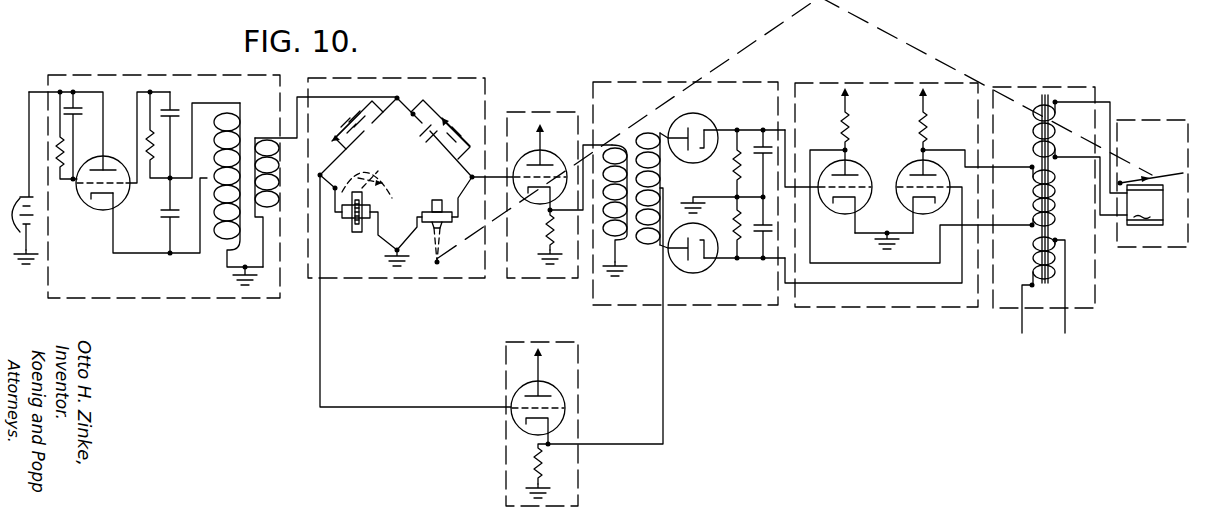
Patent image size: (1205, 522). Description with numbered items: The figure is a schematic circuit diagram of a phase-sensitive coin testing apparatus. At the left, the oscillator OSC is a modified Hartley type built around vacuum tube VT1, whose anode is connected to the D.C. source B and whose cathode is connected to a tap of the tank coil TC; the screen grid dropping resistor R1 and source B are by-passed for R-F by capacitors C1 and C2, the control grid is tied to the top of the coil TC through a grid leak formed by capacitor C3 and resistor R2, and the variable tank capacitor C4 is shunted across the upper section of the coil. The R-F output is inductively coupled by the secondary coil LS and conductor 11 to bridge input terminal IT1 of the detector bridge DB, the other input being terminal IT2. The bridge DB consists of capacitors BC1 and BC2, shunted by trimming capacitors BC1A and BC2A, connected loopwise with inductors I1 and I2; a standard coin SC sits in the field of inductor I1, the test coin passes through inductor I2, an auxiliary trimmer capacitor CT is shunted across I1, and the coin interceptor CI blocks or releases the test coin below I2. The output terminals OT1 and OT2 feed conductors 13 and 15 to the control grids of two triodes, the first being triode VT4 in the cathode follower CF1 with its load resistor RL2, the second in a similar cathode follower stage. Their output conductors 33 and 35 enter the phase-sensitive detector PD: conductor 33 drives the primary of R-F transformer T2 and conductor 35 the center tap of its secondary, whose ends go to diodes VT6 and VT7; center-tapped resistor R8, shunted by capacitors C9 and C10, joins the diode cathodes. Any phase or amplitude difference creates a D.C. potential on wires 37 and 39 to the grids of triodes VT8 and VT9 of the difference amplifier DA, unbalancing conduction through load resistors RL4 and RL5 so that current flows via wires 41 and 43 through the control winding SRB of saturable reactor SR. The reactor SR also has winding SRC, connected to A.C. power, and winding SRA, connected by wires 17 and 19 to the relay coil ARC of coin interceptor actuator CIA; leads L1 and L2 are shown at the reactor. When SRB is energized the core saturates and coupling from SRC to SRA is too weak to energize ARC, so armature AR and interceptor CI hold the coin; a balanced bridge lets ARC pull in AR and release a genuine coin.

The oscillator OSC is at (131, 78).
The source of D.C. power B is at (23, 196).
The capacitor C1 is at (76, 113).
The capacitor C2 is at (12, 226).
The screen grid dropping resistor R1 is at (67, 143).
The resistor R2 is at (146, 135).
The capacitor C3 is at (175, 111).
The variable tank capacitor C4 is at (178, 220).
The vacuum tube VT1 is at (120, 208).
The tank coil TC is at (245, 125).
The secondary coil LS is at (276, 204).
The conductor 11 is at (299, 96).
The detector bridge DB is at (365, 78).
The bridge input terminal IT1 is at (387, 91).
The bridge input terminal IT2 is at (380, 259).
The output terminal OT1 is at (326, 172).
The output terminal OT2 is at (471, 177).
The capacitor BC1 is at (366, 130).
The capacitor BC2 is at (422, 136).
The trimming capacitor BC1A is at (348, 123).
The trimming capacitor BC2A is at (456, 115).
The inductor I1 is at (364, 226).
The inductor I2 is at (428, 208).
The standard coin SC is at (348, 236).
The auxiliary trimmer capacitor CT is at (372, 167).
The coin interceptor CI is at (441, 259).
The conductor 13 is at (490, 174).
The conductor 15 is at (392, 407).
The cathode follower circuit CF1 is at (516, 278).
The triode vacuum tube VT4 is at (548, 158).
The load resistor RL2 is at (550, 237).
The output conductor 33 is at (581, 128).
The phase-sensitive detector PD is at (718, 83).
The R-F transformer T2 is at (636, 241).
The diode VT6 is at (694, 114).
The diode VT7 is at (696, 273).
The center-tapped resistor R8 is at (732, 174).
The capacitor C9 is at (757, 154).
The capacitor C10 is at (756, 227).
The output conductor 35 is at (663, 390).
The wire 37 is at (788, 142).
The wire 39 is at (788, 276).
The difference amplifier DA is at (872, 307).
The triode tube VT8 is at (863, 166).
The triode tube VT9 is at (910, 211).
The load resistor RL4 is at (857, 120).
The load resistor RL5 is at (933, 126).
The wire 41 is at (996, 167).
The wire 43 is at (996, 225).
The saturable reactor SR is at (1033, 86).
The winding SRA is at (1027, 130).
The control winding SRB is at (1026, 196).
The winding SRC is at (1027, 262).
The lead L1 is at (1022, 325).
The lead L2 is at (1070, 318).
The wire 17 is at (1112, 118).
The wire 19 is at (1102, 224).
The coin interceptor actuator CIA is at (1143, 248).
The relay coil ARC is at (1145, 205).
The relay armature AR is at (1159, 173).